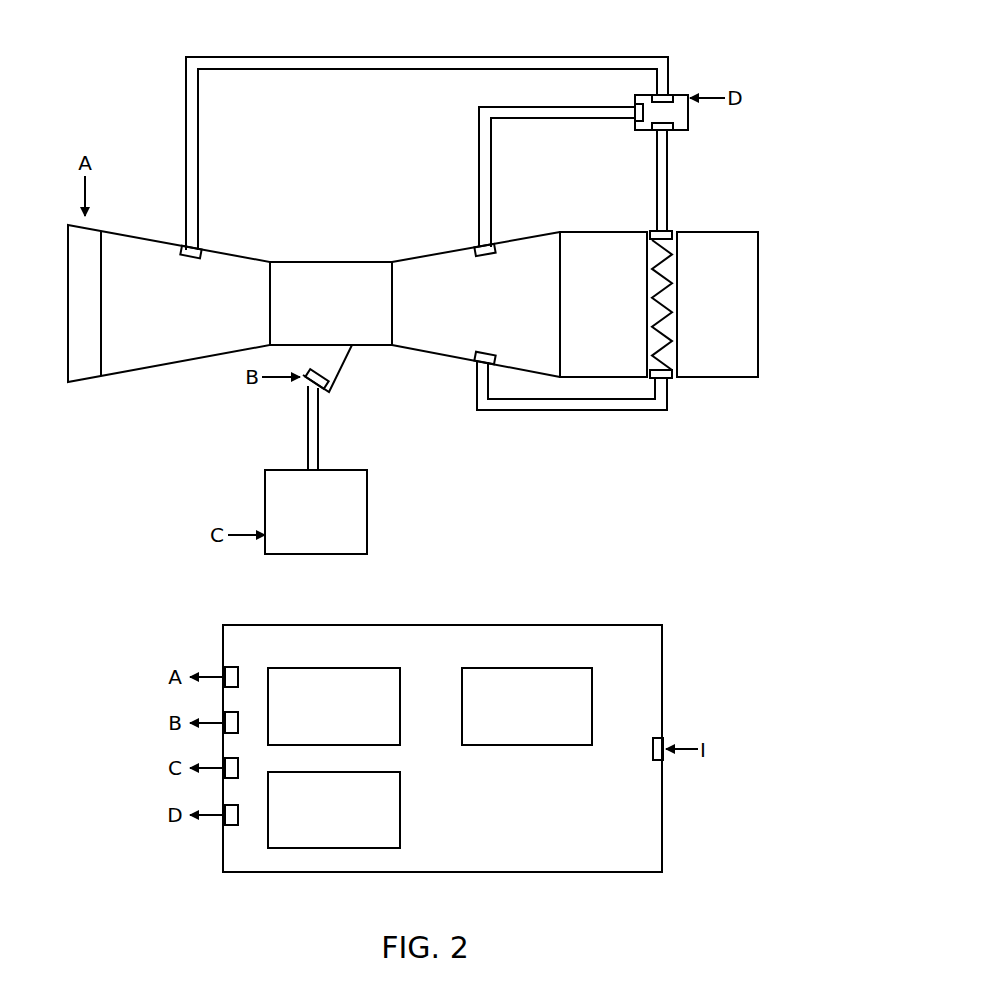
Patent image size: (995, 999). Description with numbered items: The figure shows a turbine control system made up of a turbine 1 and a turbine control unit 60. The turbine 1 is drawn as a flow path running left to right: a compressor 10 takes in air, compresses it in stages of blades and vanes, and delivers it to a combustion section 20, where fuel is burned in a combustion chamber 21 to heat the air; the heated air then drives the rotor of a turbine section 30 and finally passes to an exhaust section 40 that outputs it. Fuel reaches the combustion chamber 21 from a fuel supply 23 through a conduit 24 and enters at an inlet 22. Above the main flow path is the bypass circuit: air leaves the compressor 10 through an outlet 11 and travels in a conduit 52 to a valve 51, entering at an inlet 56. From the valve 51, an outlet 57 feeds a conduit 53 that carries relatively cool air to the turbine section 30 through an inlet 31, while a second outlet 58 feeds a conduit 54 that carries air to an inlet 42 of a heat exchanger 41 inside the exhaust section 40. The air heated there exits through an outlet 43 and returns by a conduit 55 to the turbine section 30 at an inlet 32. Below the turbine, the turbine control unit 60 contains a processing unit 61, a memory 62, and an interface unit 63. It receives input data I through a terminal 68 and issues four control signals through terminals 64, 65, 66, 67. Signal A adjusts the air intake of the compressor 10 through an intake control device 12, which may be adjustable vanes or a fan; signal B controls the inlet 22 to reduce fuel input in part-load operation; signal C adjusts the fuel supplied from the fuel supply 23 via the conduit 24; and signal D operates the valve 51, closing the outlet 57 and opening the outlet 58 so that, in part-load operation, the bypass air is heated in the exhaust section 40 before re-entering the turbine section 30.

The turbine 1 is at (792, 191).
The compressor 10 is at (165, 372).
The outlet 11 is at (180, 247).
The intake control device 12 is at (85, 384).
The combustion section 20 is at (340, 267).
The combustion chamber 21 is at (340, 370).
The inlet 22 is at (304, 383).
The fuel supply 23 is at (370, 473).
The conduit 24 is at (320, 430).
The turbine section 30 is at (548, 237).
The inlet 31 is at (495, 247).
The inlet 32 is at (488, 352).
The exhaust section 40 is at (758, 378).
The heat exchanger 41 is at (675, 362).
The inlet 42 is at (672, 232).
The outlet 43 is at (672, 380).
The valve 51 is at (688, 112).
The conduit 52 is at (405, 58).
The conduit 53 is at (479, 127).
The conduit 54 is at (667, 170).
The conduit 55 is at (590, 411).
The inlet 56 is at (673, 95).
The outlet 57 is at (637, 105).
The outlet 58 is at (673, 128).
The turbine control unit 60 is at (630, 625).
The processing unit 61 is at (400, 705).
The memory 62 is at (400, 810).
The interface unit 63 is at (592, 705).
The terminal 64 is at (240, 672).
The terminal 65 is at (240, 718).
The terminal 66 is at (240, 764).
The terminal 67 is at (240, 810).
The terminal 68 is at (653, 752).